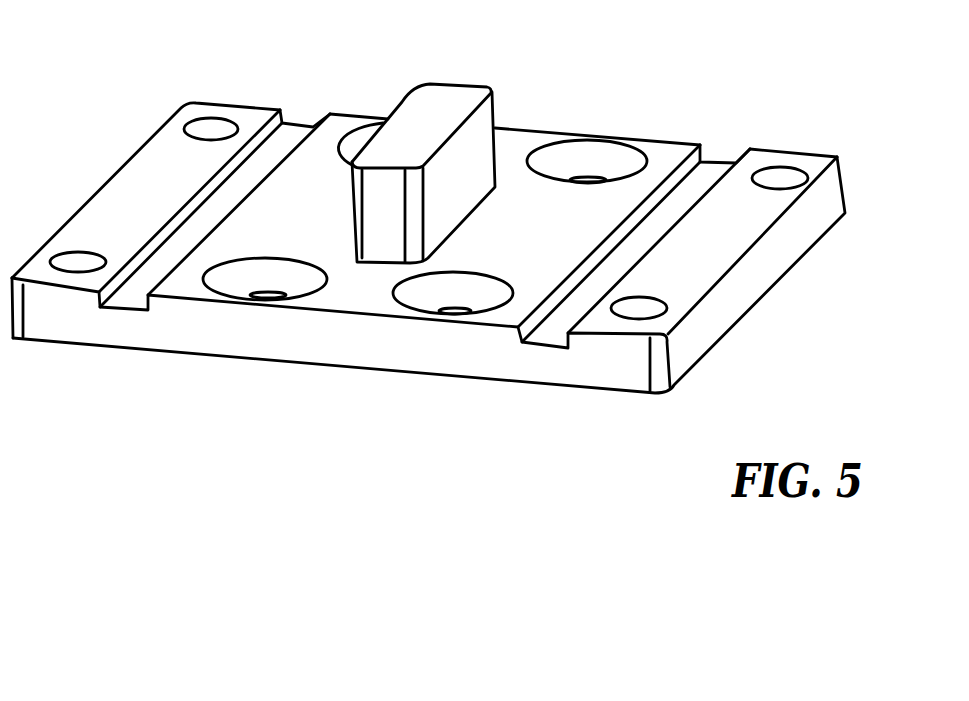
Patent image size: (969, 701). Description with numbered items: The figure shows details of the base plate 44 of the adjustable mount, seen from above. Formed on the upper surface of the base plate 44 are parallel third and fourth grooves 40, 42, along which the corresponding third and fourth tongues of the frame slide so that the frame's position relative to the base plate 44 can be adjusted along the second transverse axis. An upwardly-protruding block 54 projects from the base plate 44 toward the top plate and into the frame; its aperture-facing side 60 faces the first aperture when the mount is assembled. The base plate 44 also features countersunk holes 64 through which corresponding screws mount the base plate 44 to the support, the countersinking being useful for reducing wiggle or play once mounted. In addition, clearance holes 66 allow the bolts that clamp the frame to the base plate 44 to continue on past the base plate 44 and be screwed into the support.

The third groove 40 is at (137, 298).
The fourth groove 42 is at (552, 333).
The base plate 44 is at (843, 182).
The upwardly-protruding block 54 is at (475, 138).
The aperture-facing side 60 is at (373, 238).
The countersunk holes 64 is at (620, 183).
The clearance holes 66 is at (210, 119).